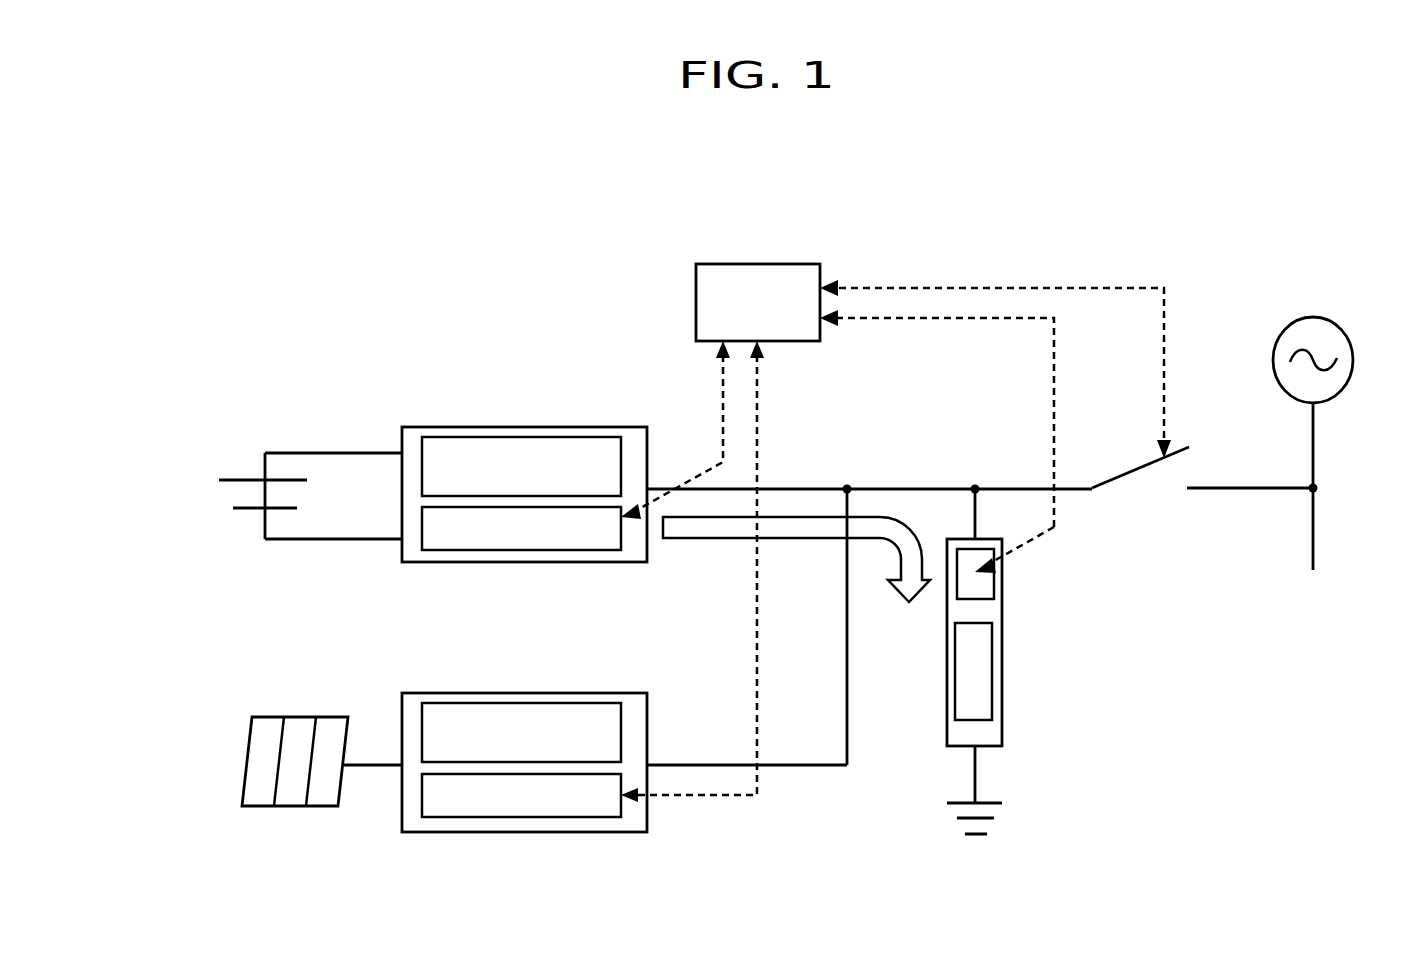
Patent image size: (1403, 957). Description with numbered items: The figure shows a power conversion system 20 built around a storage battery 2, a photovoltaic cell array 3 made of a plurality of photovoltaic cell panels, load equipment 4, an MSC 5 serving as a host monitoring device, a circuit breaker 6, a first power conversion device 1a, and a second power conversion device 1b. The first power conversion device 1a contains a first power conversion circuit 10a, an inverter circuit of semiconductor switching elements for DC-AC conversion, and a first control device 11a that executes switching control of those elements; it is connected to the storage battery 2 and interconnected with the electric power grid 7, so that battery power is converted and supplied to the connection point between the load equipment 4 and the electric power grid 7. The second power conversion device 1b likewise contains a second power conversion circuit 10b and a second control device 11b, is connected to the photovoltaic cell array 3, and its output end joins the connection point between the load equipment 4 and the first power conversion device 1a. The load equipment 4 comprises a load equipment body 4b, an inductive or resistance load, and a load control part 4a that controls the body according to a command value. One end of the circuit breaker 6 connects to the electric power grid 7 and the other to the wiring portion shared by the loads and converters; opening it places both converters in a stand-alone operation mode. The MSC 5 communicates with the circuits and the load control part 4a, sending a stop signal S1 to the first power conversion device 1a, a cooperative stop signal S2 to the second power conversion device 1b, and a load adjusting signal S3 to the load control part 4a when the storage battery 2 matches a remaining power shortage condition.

The power conversion system 20 is at (486, 231).
The first power conversion device 1a is at (610, 427).
The second power conversion device 1b is at (614, 693).
The first power conversion circuit 10a is at (422, 450).
The second power conversion circuit 10b is at (422, 735).
The first control device 11a is at (422, 547).
The second control device 11b is at (422, 795).
The storage battery 2 is at (233, 480).
The photovoltaic cell array 3 is at (300, 717).
The load equipment 4 is at (1002, 630).
The load control part 4a is at (994, 572).
The load equipment body 4b is at (992, 683).
The MSC (main site control device) 5 is at (752, 264).
The circuit breaker 6 is at (1122, 473).
The electric power grid 7 is at (1313, 317).
The stop signal S1 is at (675, 430).
The cooperative stop signal S2 is at (706, 571).
The load adjusting signal S3 is at (995, 426).